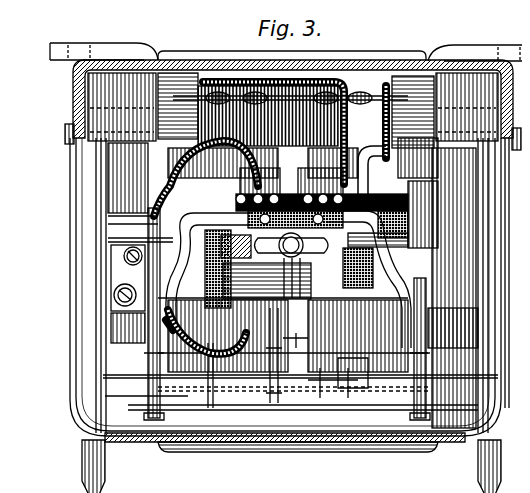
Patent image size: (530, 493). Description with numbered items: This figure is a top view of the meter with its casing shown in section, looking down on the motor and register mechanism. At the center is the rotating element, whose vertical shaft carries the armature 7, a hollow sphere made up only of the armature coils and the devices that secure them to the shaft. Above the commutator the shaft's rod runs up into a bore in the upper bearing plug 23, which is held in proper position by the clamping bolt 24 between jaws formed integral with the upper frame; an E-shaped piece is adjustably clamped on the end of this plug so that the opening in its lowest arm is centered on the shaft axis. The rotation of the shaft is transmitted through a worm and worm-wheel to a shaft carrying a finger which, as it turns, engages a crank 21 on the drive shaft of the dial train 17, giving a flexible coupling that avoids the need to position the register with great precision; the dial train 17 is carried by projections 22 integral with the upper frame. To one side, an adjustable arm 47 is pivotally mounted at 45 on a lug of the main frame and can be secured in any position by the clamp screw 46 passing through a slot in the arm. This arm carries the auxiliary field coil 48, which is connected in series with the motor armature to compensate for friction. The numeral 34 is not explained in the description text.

The armature 7 is at (238, 338).
The dial train 17 is at (310, 365).
The crank 21 is at (294, 313).
The projections 22 is at (140, 345).
The upper bearing plug 23 is at (292, 265).
The clamping bolt 24 is at (263, 270).
The terminal block 34 is at (322, 203).
The pivot 45 is at (121, 254).
The clamp screw 46 is at (128, 284).
The adjustable arm 47 is at (165, 320).
The auxiliary field coil 48 is at (225, 340).